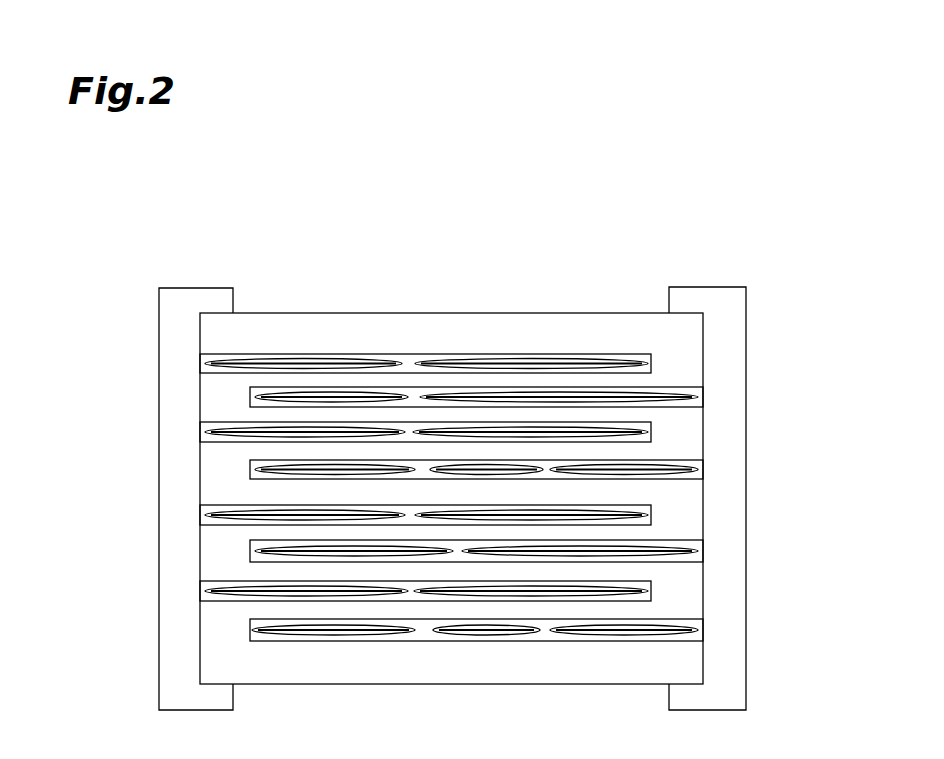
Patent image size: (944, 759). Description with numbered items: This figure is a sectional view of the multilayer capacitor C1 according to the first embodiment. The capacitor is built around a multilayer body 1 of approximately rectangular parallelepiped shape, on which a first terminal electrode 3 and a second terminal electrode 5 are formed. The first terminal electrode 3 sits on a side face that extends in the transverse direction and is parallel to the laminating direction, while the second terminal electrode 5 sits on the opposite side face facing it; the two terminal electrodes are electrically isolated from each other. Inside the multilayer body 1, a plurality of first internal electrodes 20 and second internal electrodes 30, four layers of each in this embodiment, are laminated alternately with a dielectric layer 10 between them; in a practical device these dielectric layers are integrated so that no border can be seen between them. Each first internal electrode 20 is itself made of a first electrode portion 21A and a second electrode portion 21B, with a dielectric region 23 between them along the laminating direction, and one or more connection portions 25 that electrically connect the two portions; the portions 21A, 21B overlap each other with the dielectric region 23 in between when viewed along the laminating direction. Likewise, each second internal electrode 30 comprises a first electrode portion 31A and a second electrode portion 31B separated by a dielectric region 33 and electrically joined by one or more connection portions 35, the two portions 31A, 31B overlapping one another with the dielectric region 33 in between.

The multilayer capacitor C1 is at (694, 151).
The multilayer body 1 is at (505, 313).
The first terminal electrode 3 is at (193, 288).
The second terminal electrode 5 is at (709, 287).
The dielectric layer 10 is at (670, 439).
The first internal electrode 20 is at (95, 372).
The first electrode portion 21A is at (215, 355).
The second electrode portion 21B is at (400, 365).
The dielectric region 23 is at (460, 362).
The connection portion 25 is at (414, 360).
The second internal electrode 30 is at (806, 505).
The first electrode portion 31A is at (690, 634).
The second electrode portion 31B is at (547, 628).
The dielectric region 33 is at (335, 634).
The connection portion 35 is at (253, 621).